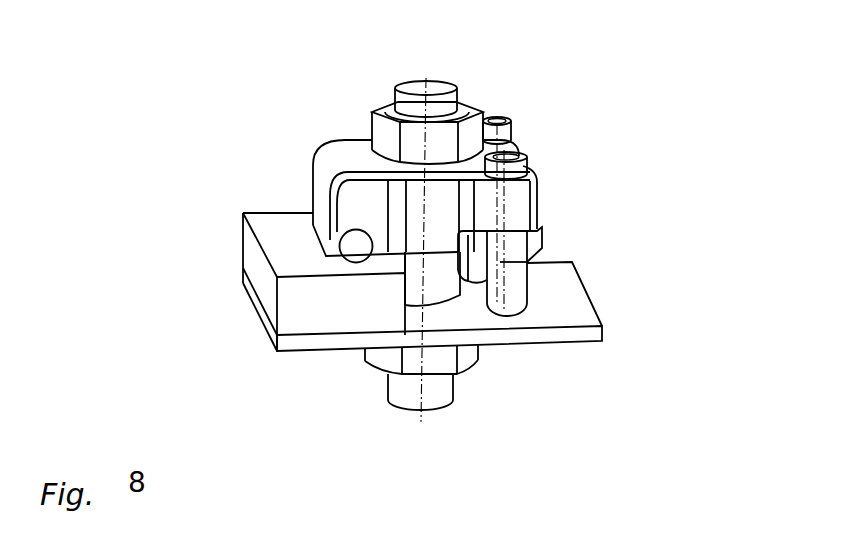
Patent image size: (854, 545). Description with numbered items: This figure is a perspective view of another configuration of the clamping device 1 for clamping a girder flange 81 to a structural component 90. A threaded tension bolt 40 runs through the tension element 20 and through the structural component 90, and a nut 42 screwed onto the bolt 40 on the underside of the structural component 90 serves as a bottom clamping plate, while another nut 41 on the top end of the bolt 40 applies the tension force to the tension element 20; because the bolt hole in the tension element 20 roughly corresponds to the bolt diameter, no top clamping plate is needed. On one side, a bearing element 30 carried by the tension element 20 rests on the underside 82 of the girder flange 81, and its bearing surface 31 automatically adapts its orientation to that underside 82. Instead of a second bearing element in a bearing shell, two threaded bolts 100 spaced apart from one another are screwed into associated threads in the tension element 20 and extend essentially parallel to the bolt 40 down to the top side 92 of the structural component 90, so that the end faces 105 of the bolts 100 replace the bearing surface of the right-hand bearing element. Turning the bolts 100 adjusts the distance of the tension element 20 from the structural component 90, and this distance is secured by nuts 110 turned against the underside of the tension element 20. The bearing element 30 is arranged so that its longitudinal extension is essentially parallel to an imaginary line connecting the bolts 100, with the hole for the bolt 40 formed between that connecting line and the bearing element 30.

The clamping device 1 is at (511, 82).
The tension element 20 is at (340, 155).
The bearing element 30 is at (357, 248).
The bearing surface 31 is at (335, 232).
The bolt 40 is at (417, 83).
The nut 41 is at (378, 127).
The nut 42 is at (463, 360).
The girder flange 81 is at (258, 262).
The underside of the girder flange 82 is at (272, 227).
The structural component 90 is at (602, 333).
The top side of structural component 92 is at (563, 265).
The threaded bolts 100 is at (512, 280).
The end faces 105 is at (555, 287).
The nuts 110 is at (537, 227).